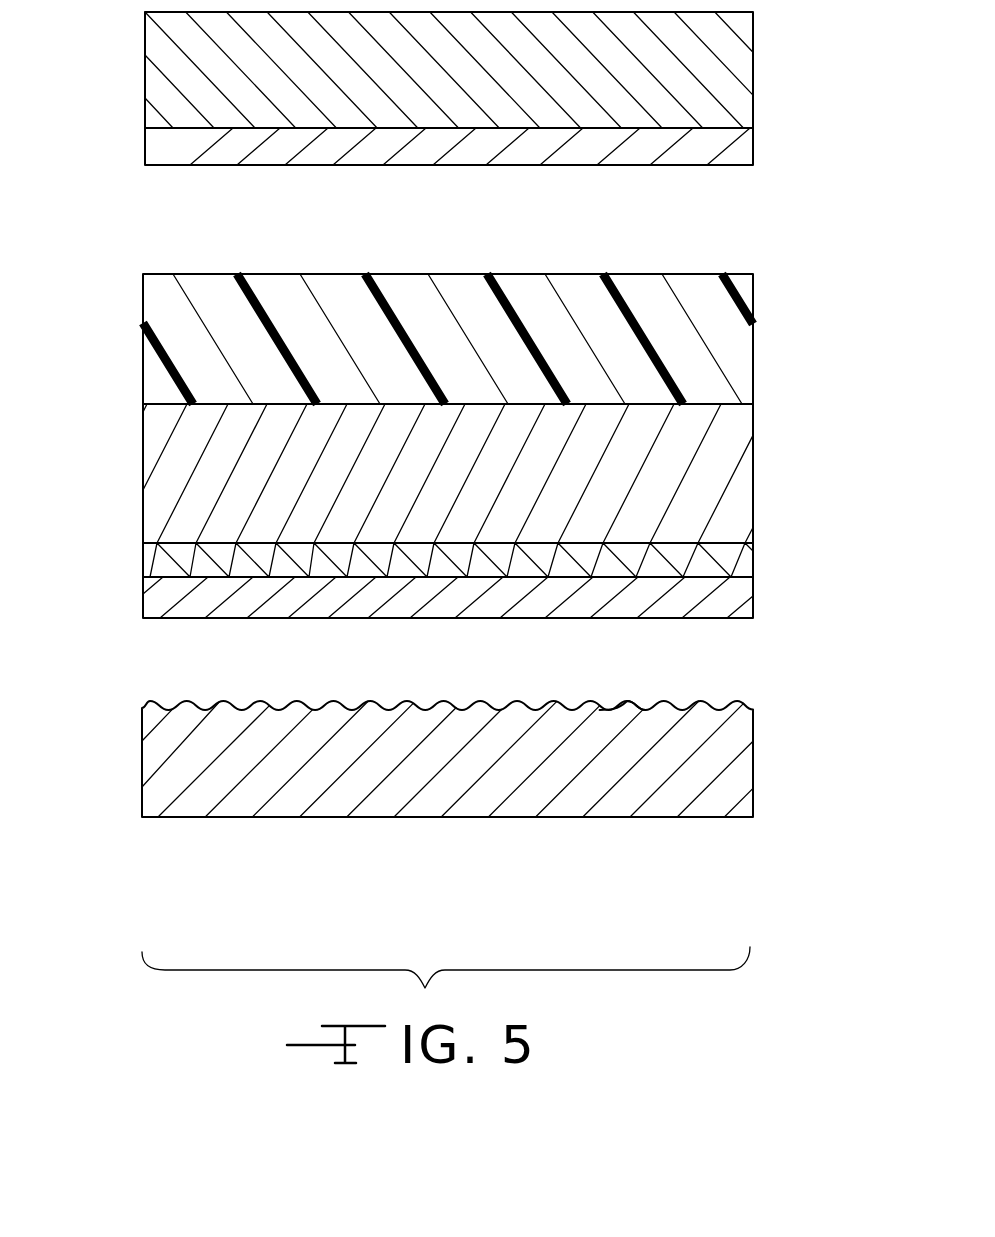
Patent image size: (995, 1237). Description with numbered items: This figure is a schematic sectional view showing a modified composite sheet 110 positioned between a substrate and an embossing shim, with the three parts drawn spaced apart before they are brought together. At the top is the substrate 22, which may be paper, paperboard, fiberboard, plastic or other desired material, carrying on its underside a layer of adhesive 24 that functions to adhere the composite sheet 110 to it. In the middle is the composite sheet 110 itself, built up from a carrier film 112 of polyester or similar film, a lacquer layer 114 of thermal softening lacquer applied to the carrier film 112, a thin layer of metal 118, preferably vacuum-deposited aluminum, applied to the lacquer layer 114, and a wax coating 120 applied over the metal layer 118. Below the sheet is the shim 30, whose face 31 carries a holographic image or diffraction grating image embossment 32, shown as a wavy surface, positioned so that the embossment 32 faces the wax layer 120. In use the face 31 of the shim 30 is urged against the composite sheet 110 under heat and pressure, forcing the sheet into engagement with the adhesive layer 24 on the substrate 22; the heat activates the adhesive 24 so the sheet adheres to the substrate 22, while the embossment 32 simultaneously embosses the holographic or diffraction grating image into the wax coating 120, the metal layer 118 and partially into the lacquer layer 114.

The substrate 22 is at (740, 61).
The layer of adhesive 24 is at (745, 148).
The modified composite sheet 110 is at (130, 272).
The carrier film 112 is at (730, 338).
The lacquer layer 114 is at (757, 450).
The layer of metal 118 is at (740, 563).
The wax coating 120 is at (752, 593).
The shim 30 is at (494, 729).
The face 31 is at (688, 710).
The holographic image or diffraction grating image embossment 32 is at (613, 698).